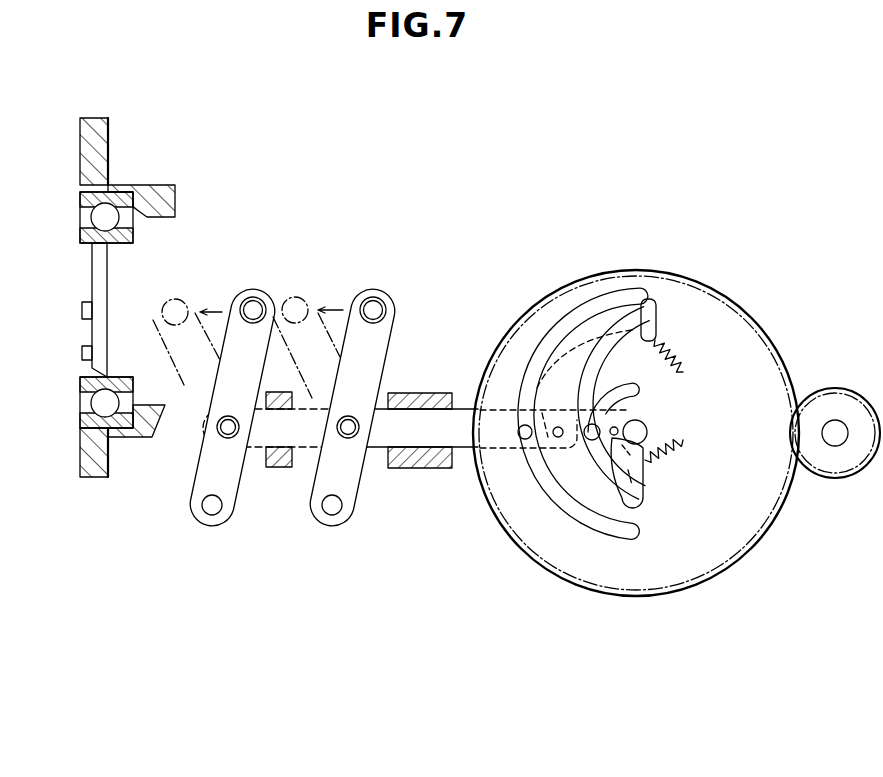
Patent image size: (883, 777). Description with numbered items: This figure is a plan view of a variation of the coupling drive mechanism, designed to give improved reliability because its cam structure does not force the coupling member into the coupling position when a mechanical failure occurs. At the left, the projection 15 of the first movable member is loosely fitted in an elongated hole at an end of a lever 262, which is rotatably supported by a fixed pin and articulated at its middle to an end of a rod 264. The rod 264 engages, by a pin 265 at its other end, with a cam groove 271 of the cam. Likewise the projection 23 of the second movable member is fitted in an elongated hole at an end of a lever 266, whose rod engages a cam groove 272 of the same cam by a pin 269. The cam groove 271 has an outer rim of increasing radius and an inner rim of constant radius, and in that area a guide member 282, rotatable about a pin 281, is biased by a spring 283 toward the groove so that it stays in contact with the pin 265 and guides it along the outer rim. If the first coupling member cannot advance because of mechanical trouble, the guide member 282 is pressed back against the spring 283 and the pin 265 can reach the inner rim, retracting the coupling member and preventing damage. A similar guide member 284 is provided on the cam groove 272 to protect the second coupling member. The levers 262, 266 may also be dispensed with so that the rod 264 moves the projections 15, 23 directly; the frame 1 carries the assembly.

The frame wall with bearings 1 is at (98, 139).
The projection of the second movable member 23 is at (258, 306).
The projection of the first movable member 15 is at (378, 306).
The lever 266 is at (256, 366).
The lever 262 is at (386, 344).
The rod 264 is at (428, 442).
The pin 269 is at (521, 418).
The guide member 284 is at (628, 318).
The pin 265 is at (604, 418).
The pin 281 is at (582, 479).
The cam groove 272 is at (557, 512).
The cam groove 271 is at (615, 496).
The guide member 282 is at (630, 520).
The spring 283 is at (664, 456).